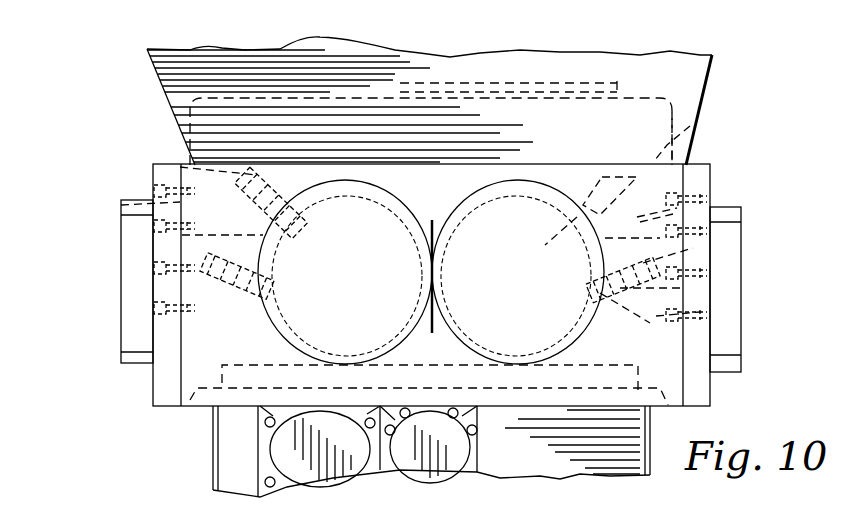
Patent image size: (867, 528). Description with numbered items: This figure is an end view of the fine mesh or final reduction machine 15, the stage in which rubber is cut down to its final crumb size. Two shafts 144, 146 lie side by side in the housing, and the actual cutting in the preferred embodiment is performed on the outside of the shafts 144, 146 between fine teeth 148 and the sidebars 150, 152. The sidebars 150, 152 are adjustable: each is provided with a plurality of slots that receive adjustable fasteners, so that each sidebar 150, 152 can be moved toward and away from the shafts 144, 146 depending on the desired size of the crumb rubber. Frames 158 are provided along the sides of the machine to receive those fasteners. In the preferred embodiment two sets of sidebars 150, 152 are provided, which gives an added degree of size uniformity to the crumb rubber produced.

The engine block housing 15 is at (177, 238).
The shaft 144 is at (350, 190).
The shaft 146 is at (527, 217).
The fine teeth 148 is at (383, 200).
The sidebar 150 is at (362, 236).
The sidebar 152 is at (690, 126).
The frame 158 is at (710, 207).